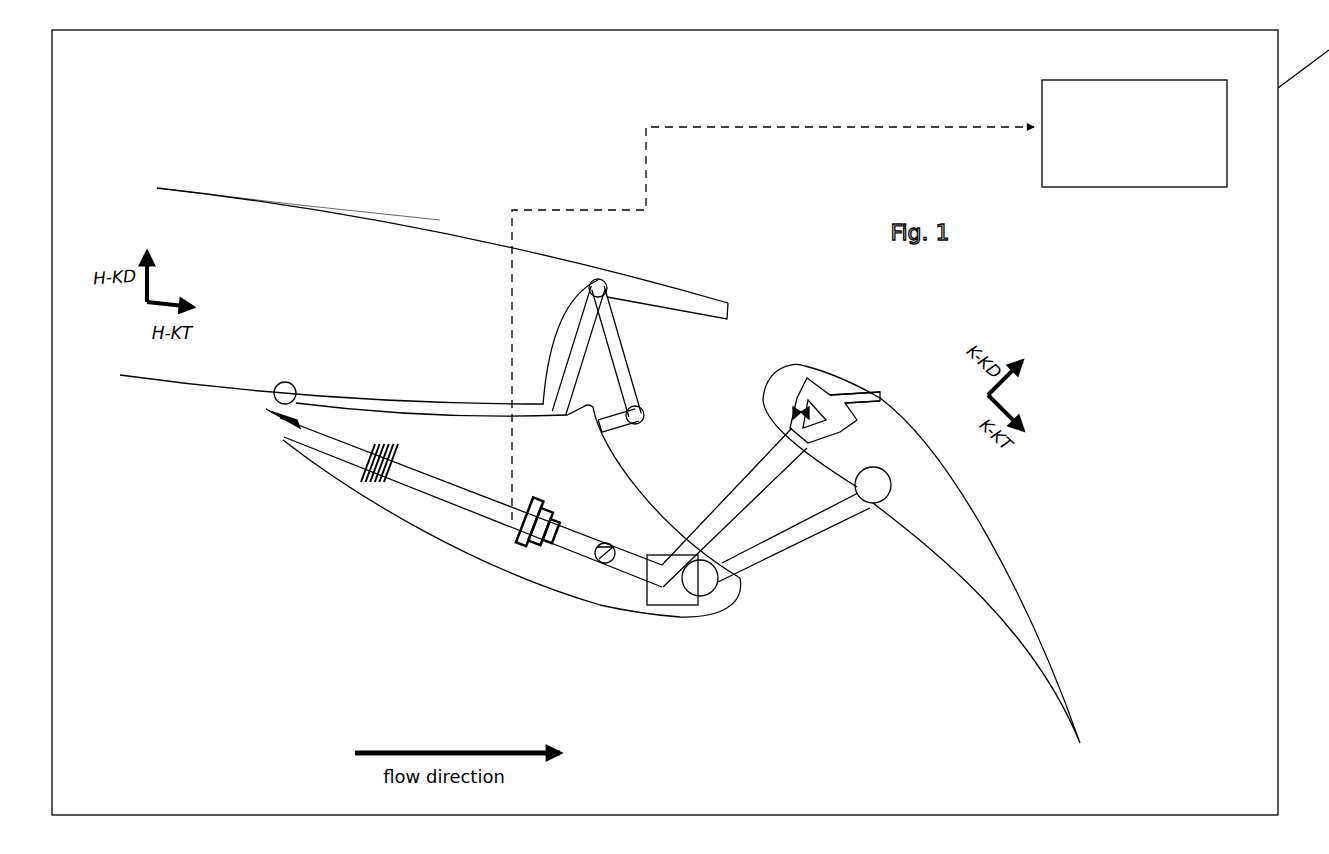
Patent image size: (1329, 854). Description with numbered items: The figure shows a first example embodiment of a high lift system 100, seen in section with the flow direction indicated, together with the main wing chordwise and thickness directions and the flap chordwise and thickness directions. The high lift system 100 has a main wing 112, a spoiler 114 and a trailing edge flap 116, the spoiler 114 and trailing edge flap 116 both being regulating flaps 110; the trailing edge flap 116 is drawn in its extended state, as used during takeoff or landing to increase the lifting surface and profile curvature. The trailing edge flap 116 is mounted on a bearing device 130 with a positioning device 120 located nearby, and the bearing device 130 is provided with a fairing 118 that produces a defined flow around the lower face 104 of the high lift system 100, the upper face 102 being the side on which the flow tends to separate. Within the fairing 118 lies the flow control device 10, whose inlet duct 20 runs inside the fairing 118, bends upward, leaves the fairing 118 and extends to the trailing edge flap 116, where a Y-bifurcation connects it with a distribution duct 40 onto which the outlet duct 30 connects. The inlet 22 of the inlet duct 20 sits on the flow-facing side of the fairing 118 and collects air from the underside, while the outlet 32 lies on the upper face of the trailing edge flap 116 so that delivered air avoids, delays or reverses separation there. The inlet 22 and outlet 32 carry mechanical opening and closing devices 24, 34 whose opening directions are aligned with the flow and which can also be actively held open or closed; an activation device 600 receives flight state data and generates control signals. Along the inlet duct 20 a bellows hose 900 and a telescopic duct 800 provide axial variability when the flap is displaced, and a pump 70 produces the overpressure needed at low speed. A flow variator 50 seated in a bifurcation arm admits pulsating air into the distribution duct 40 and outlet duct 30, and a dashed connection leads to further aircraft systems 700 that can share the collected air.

The flow control device 10 is at (541, 519).
The inlet duct 20 is at (562, 548).
The inlet 22 is at (280, 432).
The inlet opening and closing device 24 is at (275, 418).
The outlet duct 30 is at (840, 390).
The outlet 32 is at (870, 401).
The outlet opening and closing device 34 is at (865, 392).
The distribution duct 40 is at (831, 386).
The flow variator 50 is at (792, 413).
The pump 70 is at (607, 563).
The high lift system 100 is at (560, 181).
The upper face of the high lift system 102 is at (376, 207).
The lower face of the high lift system 104 is at (278, 532).
The regulating flap 110 is at (811, 486).
The main wing 112 is at (247, 212).
The spoiler 114 is at (677, 297).
The trailing edge flap 116 is at (953, 537).
The fairing 118 is at (505, 564).
The positioning device 120 is at (677, 605).
The bearing device 130 is at (700, 590).
The activation device 600 is at (288, 382).
The further systems 700 is at (1134, 133).
The telescopic duct 800 is at (556, 506).
The bellows hose 900 is at (400, 448).